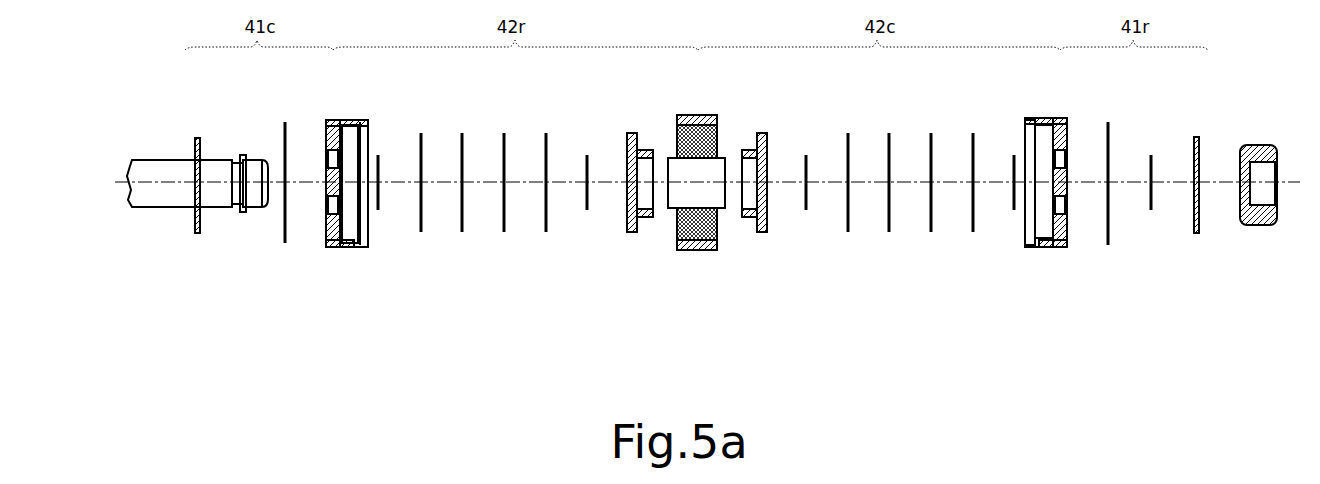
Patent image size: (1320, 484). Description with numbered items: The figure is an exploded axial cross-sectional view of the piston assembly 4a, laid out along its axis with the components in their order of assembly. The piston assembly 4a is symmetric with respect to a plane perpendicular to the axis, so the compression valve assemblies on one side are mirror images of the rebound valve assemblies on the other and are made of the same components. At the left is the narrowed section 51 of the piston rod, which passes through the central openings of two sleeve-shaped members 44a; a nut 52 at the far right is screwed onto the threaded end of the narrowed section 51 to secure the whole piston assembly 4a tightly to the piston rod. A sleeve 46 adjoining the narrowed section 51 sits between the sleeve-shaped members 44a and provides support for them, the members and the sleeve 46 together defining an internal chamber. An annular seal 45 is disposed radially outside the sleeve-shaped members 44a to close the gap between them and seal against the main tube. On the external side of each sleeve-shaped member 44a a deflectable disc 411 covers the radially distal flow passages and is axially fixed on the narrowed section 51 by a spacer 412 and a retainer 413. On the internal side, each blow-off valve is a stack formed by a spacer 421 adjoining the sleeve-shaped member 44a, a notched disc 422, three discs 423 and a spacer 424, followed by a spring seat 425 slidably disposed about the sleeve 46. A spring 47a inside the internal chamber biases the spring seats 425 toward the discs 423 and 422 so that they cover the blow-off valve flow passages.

The narrowed section of the piston rod 51 is at (150, 195).
The retainer 413 is at (197, 233).
The spacer 412 is at (243, 210).
The deflectable disc 411 is at (285, 243).
The sleeve-shaped member 44a is at (328, 247).
The spacer 421 is at (378, 210).
The notched disc 422 is at (421, 232).
The disc 423 is at (546, 232).
The spacer 424 is at (587, 210).
The spring seat 425 is at (642, 217).
The sleeve 46 is at (675, 208).
The spring 47a is at (698, 250).
The annular seal 45 is at (706, 250).
The piston assembly 4a is at (953, 247).
The nut 52 is at (1255, 225).